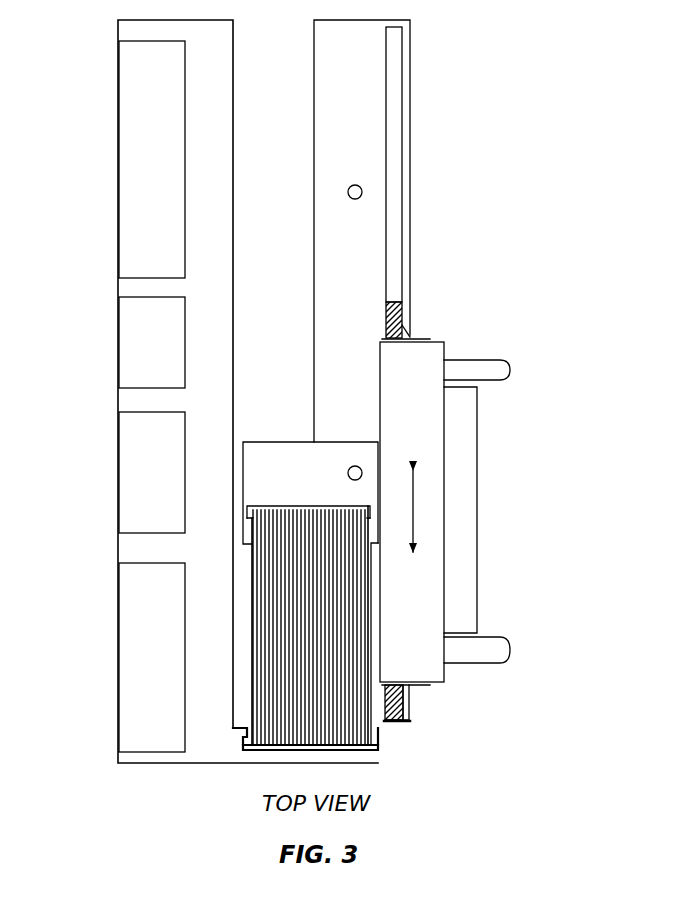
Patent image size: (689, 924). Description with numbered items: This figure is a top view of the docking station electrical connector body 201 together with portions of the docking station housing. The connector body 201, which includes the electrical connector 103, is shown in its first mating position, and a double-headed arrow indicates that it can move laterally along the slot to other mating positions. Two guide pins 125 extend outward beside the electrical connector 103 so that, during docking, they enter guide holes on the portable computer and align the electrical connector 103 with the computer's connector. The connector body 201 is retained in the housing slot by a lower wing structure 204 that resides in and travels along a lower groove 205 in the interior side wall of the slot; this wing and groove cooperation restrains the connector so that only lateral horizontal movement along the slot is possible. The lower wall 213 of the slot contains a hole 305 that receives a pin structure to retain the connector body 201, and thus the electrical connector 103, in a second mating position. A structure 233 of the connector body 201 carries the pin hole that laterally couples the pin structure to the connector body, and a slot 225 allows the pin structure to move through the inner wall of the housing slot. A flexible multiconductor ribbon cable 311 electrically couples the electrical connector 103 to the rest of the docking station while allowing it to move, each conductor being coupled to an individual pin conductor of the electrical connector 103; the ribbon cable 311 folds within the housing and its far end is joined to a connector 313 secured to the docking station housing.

The electrical connector 103 is at (490, 513).
The guide pins 125 is at (503, 372).
The docking station connector body 201 is at (535, 666).
The lower wing structure 204 is at (402, 715).
The lower groove 205 is at (404, 57).
The lower wall 213 is at (326, 118).
The slot 225 is at (350, 468).
The structure 233 is at (310, 593).
The hole 305 is at (361, 187).
The ribbon cable 311 is at (252, 662).
The connector 313 is at (380, 752).